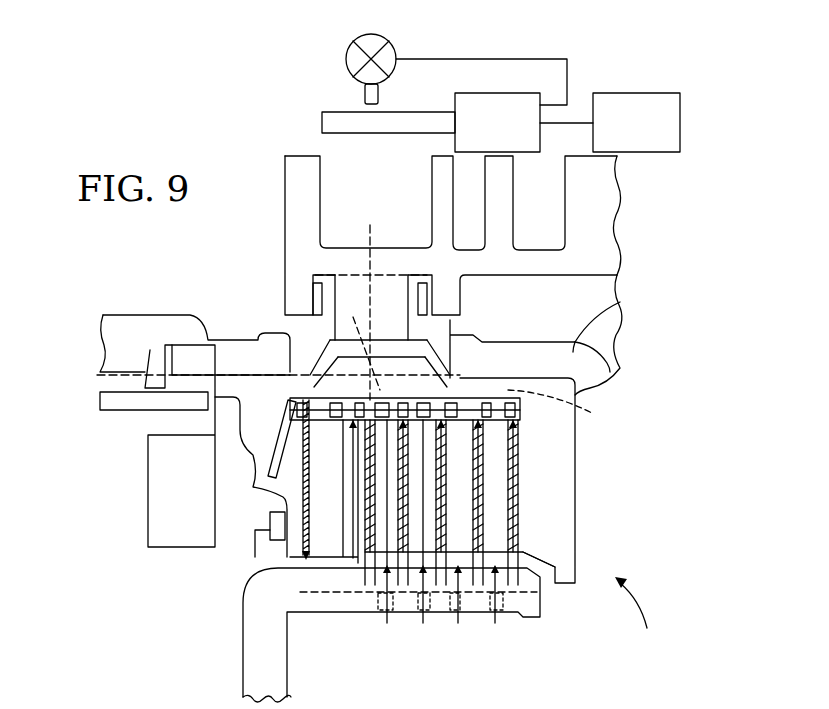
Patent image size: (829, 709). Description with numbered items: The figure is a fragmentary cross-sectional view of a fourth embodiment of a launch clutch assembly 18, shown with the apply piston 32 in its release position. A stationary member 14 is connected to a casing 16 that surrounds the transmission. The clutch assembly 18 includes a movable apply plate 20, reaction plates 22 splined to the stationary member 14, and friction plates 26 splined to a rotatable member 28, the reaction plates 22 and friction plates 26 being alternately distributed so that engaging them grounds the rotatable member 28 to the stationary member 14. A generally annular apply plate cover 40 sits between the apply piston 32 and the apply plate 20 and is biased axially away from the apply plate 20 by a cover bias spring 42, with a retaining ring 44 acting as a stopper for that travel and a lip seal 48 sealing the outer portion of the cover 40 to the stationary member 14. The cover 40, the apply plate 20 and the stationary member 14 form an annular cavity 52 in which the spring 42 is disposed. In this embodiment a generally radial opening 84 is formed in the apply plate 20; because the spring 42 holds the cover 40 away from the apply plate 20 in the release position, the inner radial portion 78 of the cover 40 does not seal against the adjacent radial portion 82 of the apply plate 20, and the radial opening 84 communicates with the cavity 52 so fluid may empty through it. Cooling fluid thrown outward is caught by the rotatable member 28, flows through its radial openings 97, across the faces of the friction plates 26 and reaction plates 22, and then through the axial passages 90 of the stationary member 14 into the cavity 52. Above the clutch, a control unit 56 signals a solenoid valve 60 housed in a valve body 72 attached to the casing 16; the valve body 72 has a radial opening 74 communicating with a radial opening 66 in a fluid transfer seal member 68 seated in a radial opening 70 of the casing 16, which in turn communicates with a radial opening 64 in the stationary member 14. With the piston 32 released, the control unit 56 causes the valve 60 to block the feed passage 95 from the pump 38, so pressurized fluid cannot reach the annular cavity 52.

The stationary member 14 is at (492, 393).
The casing 16 is at (620, 302).
The clutch assembly 18 is at (637, 614).
The apply plate 20 is at (340, 548).
The reaction plates 22 is at (522, 472).
The friction plates 26 is at (517, 550).
The rotatable member 28 is at (243, 650).
The apply piston 32 is at (125, 422).
The pump 38 is at (346, 60).
The apply plate cover 40 is at (222, 472).
The cover bias spring 42 is at (272, 410).
The retaining ring 44 is at (270, 519).
The lip seal 48 is at (270, 421).
The annular cavity 52 is at (267, 410).
The control unit 56 is at (649, 134).
The solenoid valve 60 is at (509, 134).
The radial opening 64 is at (349, 309).
The radial opening 66 is at (400, 275).
The fluid transfer seal member 68 is at (452, 313).
The radial opening 70 is at (453, 333).
The valve body 72 is at (313, 178).
The radial opening 74 is at (333, 267).
The inner radial portion 78 is at (300, 515).
The radial portion 82 is at (303, 527).
The radial opening 84 is at (322, 545).
The axial passages 90 is at (564, 408).
The feed passage 95 is at (363, 98).
The radial openings 97 is at (495, 617).